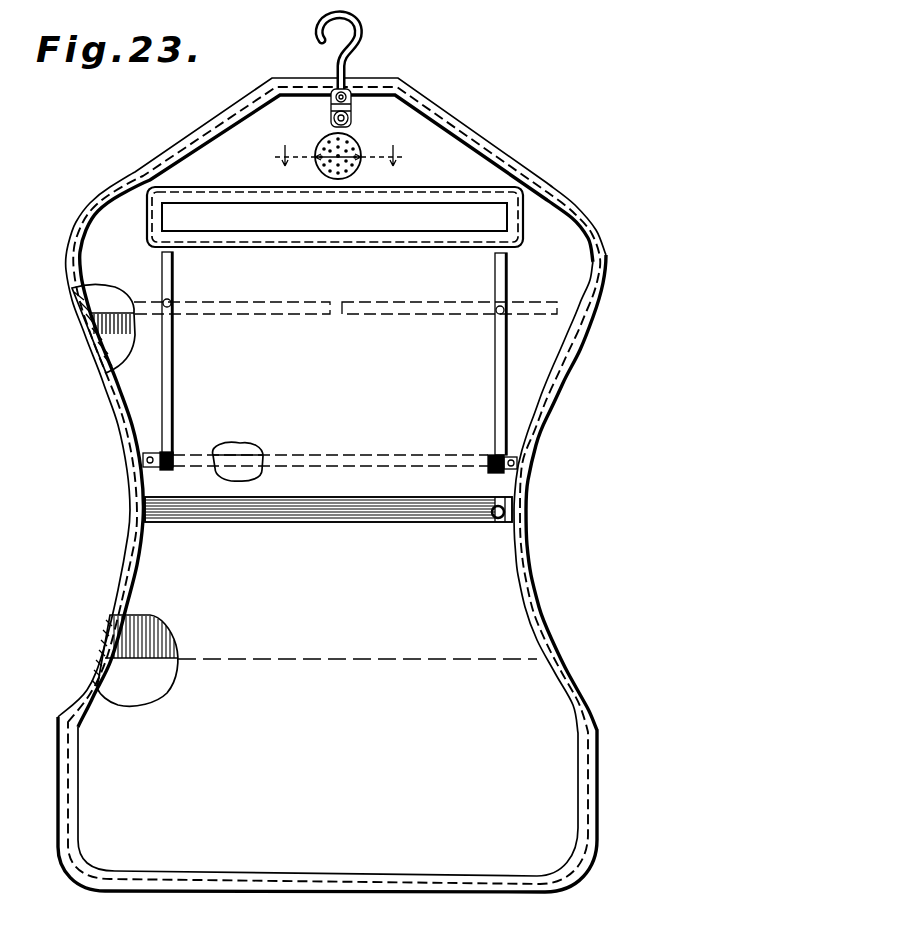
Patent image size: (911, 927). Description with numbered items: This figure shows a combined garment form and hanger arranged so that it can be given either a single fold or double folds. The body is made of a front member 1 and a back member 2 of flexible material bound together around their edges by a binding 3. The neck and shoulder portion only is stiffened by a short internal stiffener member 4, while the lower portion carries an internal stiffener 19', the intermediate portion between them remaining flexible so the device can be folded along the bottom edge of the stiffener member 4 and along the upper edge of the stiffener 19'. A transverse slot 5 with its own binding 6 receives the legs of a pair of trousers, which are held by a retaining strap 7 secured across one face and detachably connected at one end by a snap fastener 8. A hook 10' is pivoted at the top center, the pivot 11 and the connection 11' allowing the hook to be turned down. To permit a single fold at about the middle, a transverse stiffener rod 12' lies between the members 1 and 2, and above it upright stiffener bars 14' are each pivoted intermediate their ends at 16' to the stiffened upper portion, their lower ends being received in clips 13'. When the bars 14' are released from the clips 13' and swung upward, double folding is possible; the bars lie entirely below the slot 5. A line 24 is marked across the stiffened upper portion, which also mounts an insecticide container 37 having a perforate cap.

The front member 1 is at (98, 246).
The back member 2 is at (111, 354).
The binding 3 is at (83, 343).
The stiffener member 4 is at (99, 307).
The transverse slot 5 is at (387, 234).
The binding 6 is at (295, 245).
The retaining strap 7 is at (365, 520).
The snap fastener 8 is at (494, 520).
The hanger hook 10' is at (366, 48).
The pivot 11 is at (403, 96).
The hook eyelet 11' is at (375, 81).
The transverse stiffener rod 12' is at (263, 445).
The clips 13' is at (330, 444).
The upright stiffener bars 14' is at (334, 353).
The pivotal connection 16' is at (345, 291).
The internal stiffener 19' is at (288, 660).
The section line 24 is at (338, 156).
The insecticide container 37 is at (357, 143).